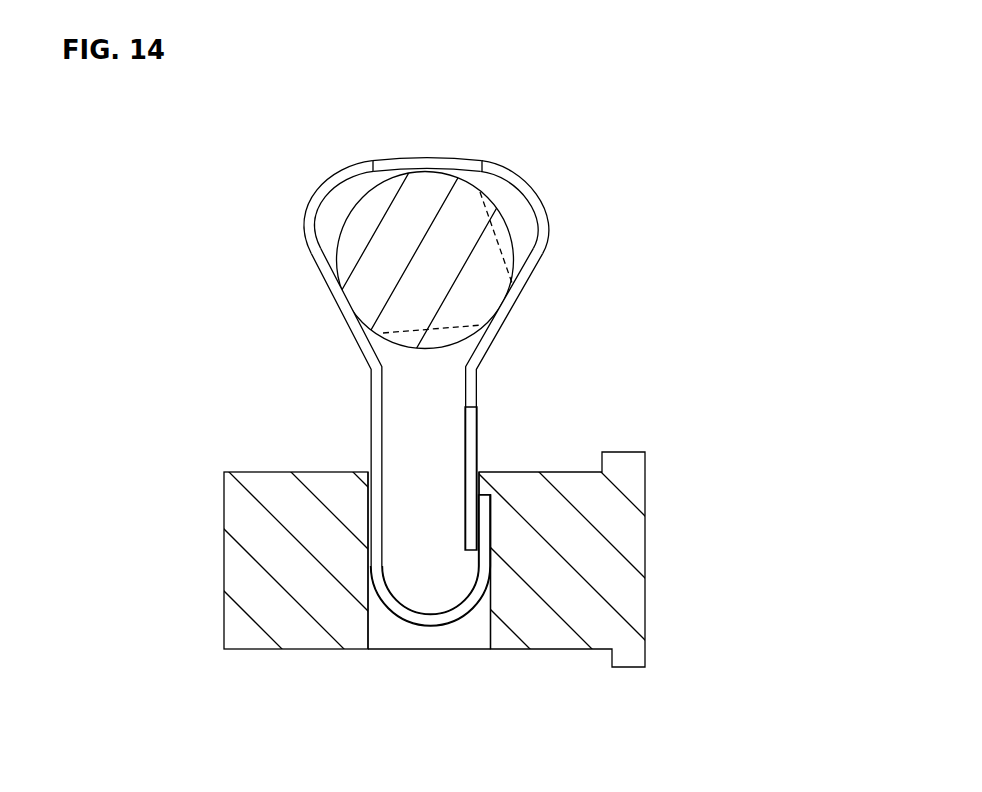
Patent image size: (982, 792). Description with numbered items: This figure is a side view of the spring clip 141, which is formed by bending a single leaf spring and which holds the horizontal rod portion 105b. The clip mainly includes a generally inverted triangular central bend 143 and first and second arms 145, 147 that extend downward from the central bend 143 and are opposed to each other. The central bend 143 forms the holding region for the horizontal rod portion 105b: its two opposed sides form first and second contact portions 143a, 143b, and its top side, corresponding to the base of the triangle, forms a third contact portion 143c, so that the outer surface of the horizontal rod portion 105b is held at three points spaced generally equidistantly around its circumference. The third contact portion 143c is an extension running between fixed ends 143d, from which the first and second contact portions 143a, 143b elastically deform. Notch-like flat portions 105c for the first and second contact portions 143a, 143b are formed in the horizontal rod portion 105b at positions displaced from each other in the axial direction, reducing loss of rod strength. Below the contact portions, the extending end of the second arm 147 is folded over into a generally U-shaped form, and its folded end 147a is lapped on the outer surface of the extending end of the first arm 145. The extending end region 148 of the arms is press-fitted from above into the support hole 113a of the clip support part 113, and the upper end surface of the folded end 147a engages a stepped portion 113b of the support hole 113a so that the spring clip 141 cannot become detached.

The spring clip 141 is at (419, 376).
The central bend 143 is at (419, 398).
The first contact portion 143a is at (504, 400).
The second contact portion 143b is at (346, 315).
The third contact portion 143c is at (427, 164).
The fixed ends 143d is at (426, 208).
The first arm 145 is at (487, 416).
The second arm 147 is at (431, 500).
The folded end 147a is at (488, 528).
The extending end region 148 is at (400, 632).
The horizontal rod portion 105b is at (370, 235).
The flat portions 105c is at (487, 214).
The clip support part 113 is at (233, 572).
The support hole 113a is at (457, 635).
The stepped portion 113b is at (510, 508).